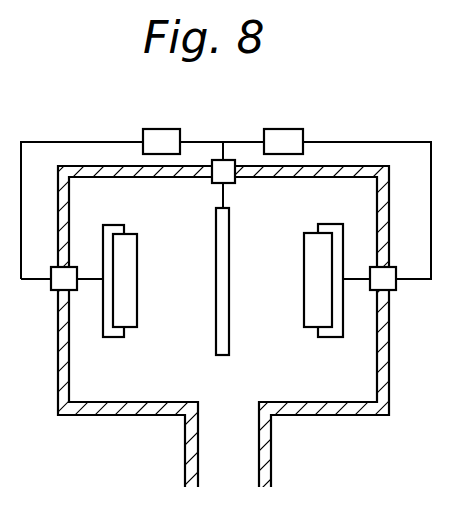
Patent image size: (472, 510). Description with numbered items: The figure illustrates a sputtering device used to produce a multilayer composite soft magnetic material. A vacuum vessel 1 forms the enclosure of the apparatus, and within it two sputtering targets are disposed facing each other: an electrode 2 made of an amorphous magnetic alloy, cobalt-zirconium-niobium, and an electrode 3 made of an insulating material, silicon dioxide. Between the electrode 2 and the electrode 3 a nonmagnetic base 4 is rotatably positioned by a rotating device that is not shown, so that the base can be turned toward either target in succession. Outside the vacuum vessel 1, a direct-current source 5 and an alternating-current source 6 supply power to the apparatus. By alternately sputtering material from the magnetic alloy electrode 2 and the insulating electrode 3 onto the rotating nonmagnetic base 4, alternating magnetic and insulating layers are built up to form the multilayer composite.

The vacuum vessel 1 is at (185, 458).
The electrode 2 is at (137, 280).
The electrode 3 is at (310, 289).
The nonmagnetic base 4 is at (228, 238).
The direct-current source 5 is at (171, 137).
The alternating-current source 6 is at (290, 137).